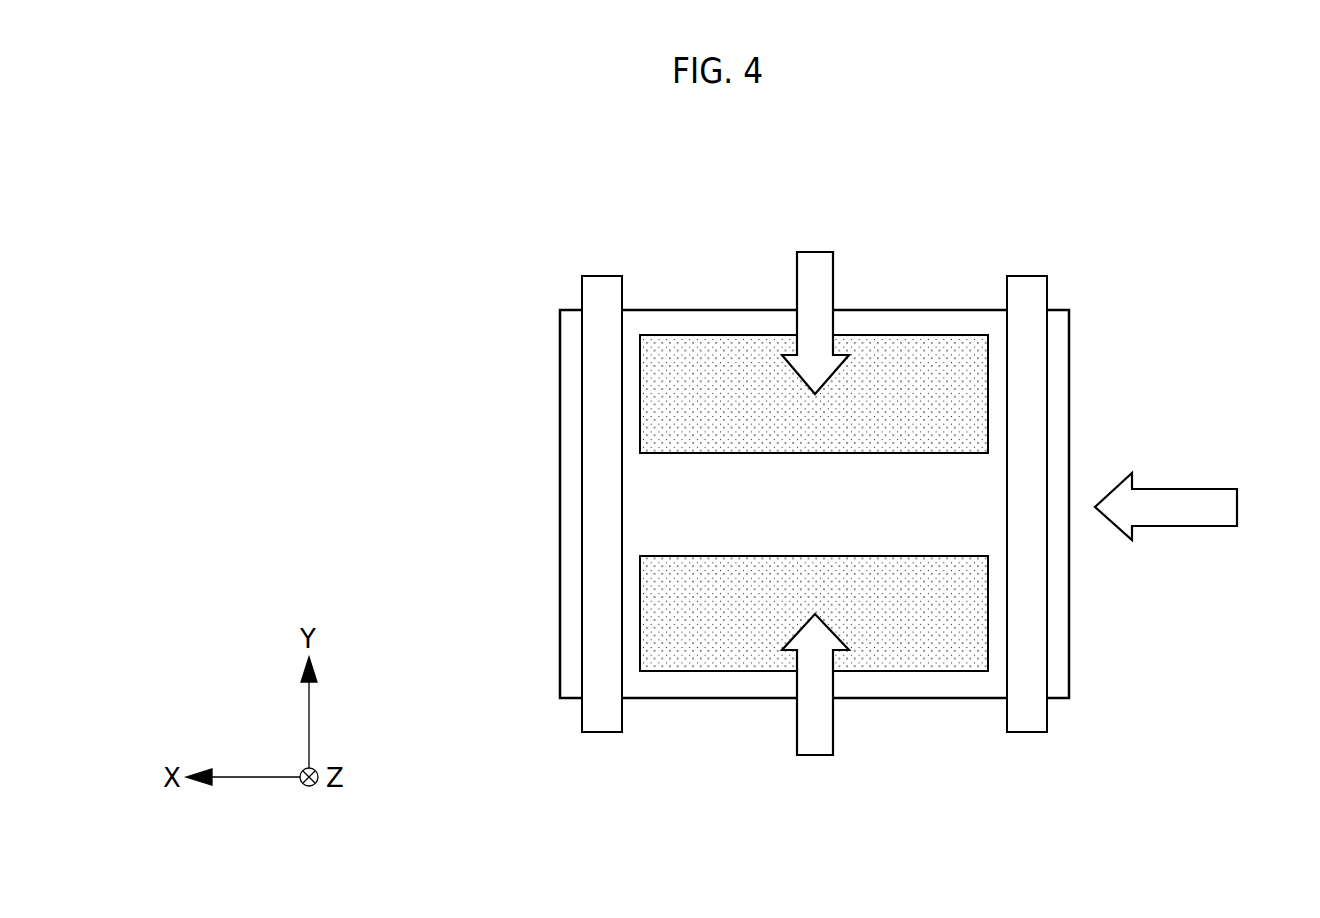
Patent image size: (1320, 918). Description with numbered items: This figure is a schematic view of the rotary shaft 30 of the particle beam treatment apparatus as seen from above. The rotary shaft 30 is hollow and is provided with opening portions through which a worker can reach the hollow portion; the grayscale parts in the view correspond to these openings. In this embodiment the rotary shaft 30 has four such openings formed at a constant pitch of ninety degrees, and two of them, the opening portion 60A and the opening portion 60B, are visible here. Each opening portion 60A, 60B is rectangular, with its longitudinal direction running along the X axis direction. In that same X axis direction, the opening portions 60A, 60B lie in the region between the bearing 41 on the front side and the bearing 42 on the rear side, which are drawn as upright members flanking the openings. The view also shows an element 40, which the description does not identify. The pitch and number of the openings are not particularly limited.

The rotary shaft 30 is at (819, 500).
The case 40 is at (1073, 372).
The bearing on the front side 41 is at (598, 482).
The bearing on the rear side 42 is at (1028, 431).
The opening portion 60A is at (699, 371).
The opening portion 60B is at (688, 642).